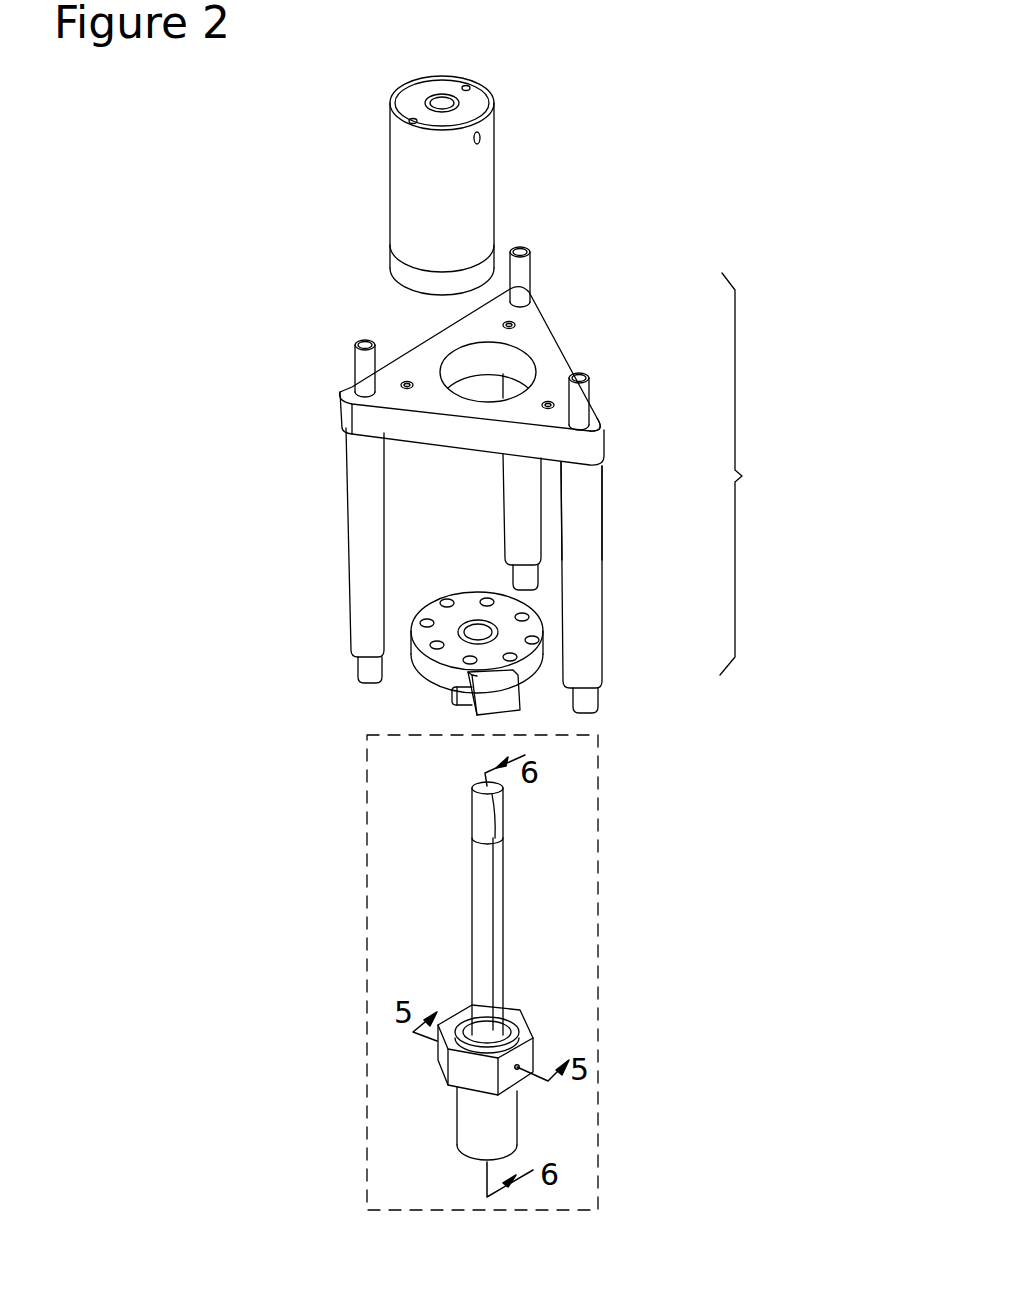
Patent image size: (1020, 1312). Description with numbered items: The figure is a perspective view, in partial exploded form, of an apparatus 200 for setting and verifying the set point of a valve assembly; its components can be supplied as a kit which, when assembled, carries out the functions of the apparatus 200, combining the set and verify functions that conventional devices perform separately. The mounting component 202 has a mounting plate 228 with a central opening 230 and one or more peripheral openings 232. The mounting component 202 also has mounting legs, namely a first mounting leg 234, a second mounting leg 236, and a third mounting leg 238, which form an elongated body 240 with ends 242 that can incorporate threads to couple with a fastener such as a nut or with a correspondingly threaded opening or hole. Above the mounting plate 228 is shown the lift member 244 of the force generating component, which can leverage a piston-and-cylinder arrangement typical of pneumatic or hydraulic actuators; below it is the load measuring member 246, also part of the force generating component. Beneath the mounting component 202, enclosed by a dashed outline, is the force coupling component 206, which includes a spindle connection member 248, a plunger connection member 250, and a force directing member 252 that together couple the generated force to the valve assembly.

The apparatus 200 is at (708, 91).
The mounting component 202 is at (756, 474).
The force coupling component 206 is at (622, 892).
The mounting plate 228 is at (561, 338).
The central opening 230 is at (501, 360).
The peripheral openings 232 is at (595, 414).
The first mounting leg 234 is at (608, 558).
The second mounting leg 236 is at (344, 529).
The third mounting leg 238 is at (500, 521).
The elongated body 240 is at (600, 514).
The ends 242 is at (593, 376).
The lift member 244 is at (500, 156).
The load measuring member 246 is at (433, 691).
The spindle connection member 248 is at (505, 931).
The plunger connection member 250 is at (520, 1112).
The force directing member 252 is at (539, 1042).